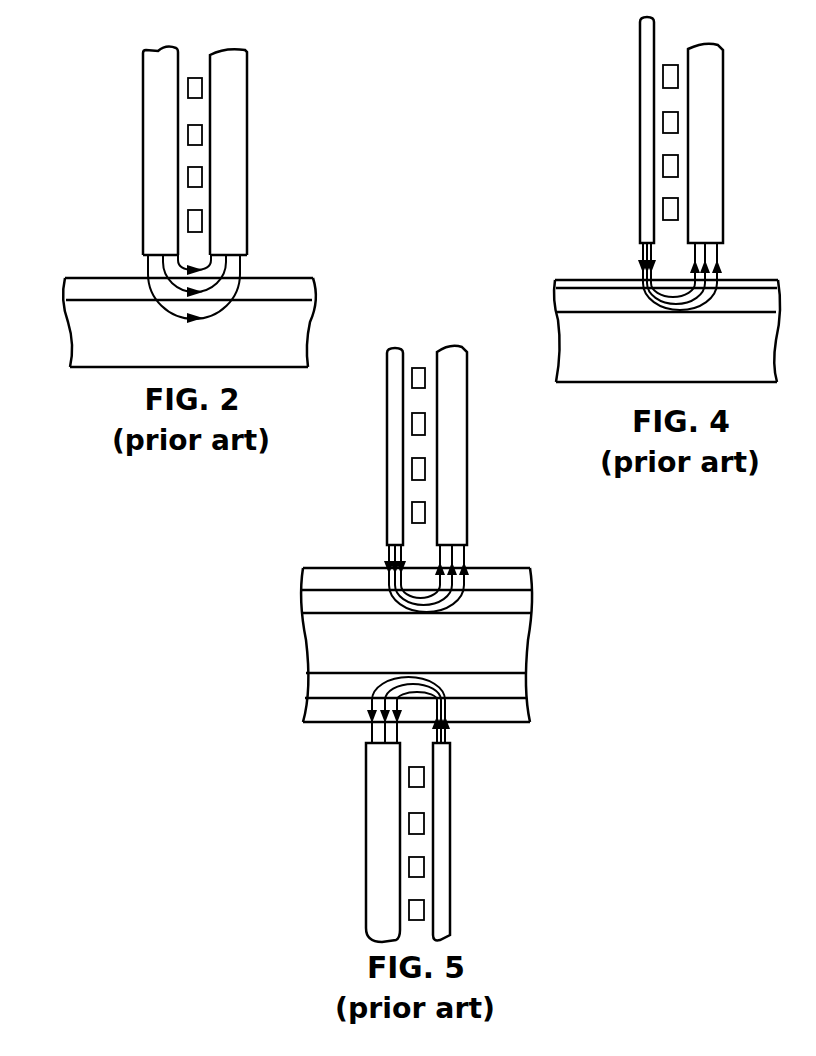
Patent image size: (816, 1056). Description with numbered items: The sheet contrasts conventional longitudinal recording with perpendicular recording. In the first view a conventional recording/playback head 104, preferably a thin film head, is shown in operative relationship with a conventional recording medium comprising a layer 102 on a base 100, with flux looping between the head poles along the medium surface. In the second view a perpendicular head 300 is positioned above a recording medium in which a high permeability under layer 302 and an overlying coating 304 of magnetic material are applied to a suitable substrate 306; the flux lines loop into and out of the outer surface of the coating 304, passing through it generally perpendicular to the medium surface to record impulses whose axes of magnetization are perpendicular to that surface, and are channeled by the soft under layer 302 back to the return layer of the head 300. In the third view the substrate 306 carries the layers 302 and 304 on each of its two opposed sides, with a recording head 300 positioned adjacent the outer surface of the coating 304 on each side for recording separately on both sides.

In FIG. 2, the substrate 100 is at (77, 358).
In FIG. 2, the recording layer 102 is at (107, 283).
In FIG. 2, the recording/playback head 104 is at (136, 144).
In FIG. 4, the perpendicular head 300 is at (642, 167).
In FIG. 5, the perpendicular head 300 is at (480, 477).
In FIG. 4, the high permeability under layer 302 is at (563, 300).
In FIG. 5, the high permeability under layer 302 is at (520, 605).
In FIG. 4, the coating of magnetic material 304 is at (580, 282).
In FIG. 5, the coating of magnetic material 304 is at (520, 577).
In FIG. 4, the substrate 306 is at (636, 367).
In FIG. 5, the substrate 306 is at (527, 647).